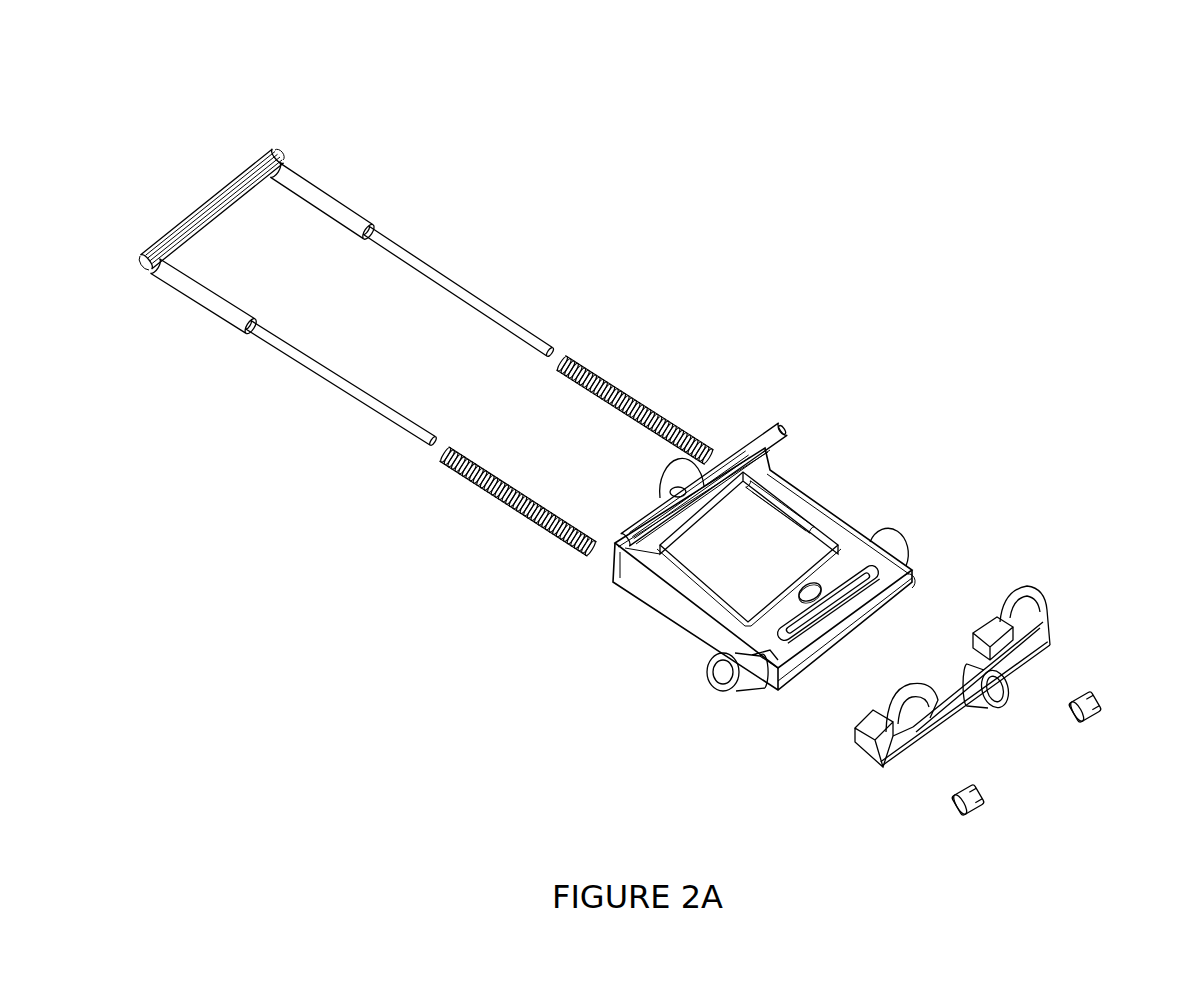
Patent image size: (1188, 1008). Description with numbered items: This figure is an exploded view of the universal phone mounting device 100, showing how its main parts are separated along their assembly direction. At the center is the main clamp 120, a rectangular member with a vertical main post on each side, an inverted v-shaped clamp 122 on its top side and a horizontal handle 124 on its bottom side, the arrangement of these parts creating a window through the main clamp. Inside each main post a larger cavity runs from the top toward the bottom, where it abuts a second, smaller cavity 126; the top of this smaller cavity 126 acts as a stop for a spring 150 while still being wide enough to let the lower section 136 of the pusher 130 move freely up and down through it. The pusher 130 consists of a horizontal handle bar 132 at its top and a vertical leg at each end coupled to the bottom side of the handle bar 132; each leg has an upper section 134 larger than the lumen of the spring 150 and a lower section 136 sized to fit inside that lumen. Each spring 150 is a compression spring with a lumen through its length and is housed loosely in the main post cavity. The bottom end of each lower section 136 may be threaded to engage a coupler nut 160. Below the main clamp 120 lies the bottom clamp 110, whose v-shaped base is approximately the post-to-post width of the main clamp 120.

The device 100 is at (1025, 95).
The bottom clamp 110 is at (1040, 597).
The main clamp 120 is at (820, 501).
The inverted v-shaped clamp 122 is at (760, 424).
The horizontal handle 124 is at (833, 638).
The cavity 126 is at (914, 580).
The pusher 130 is at (362, 205).
The horizontal handle bar 132 is at (207, 197).
The upper section 134 is at (312, 174).
The lower section 136 is at (478, 298).
The spring 150 is at (618, 372).
The coupler nut 160 is at (1092, 690).